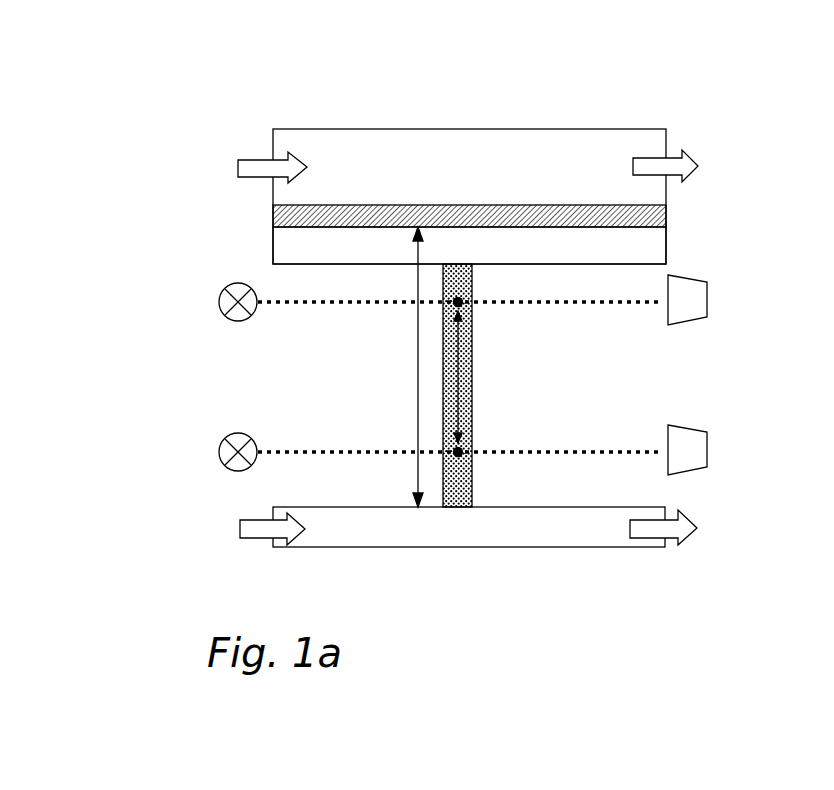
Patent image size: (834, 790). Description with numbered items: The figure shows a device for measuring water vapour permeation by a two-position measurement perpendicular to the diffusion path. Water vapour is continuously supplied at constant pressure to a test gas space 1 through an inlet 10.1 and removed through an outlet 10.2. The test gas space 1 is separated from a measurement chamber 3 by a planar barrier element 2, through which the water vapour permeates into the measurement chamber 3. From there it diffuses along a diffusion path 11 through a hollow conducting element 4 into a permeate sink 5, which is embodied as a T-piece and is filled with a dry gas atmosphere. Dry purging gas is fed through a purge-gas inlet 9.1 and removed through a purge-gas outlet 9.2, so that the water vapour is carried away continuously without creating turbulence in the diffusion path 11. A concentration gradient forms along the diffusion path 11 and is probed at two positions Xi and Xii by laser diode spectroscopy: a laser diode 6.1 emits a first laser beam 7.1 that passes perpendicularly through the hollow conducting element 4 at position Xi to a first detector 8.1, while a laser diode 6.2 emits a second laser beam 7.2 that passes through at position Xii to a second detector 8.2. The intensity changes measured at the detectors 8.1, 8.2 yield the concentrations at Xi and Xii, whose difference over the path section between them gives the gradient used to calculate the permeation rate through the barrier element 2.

The test gas space 1 is at (443, 158).
The barrier element 2 is at (666, 213).
The measurement chamber 3 is at (642, 248).
The hollow conducting element 4 is at (473, 490).
The permeate sink 5 is at (553, 531).
The laser diode 6.1 is at (222, 302).
The laser diode 6.2 is at (222, 450).
The first laser beam 7.1 is at (305, 302).
The second laser beam 7.2 is at (290, 452).
The first detector 8.1 is at (686, 305).
The second detector 8.2 is at (688, 450).
The purge-gas inlet 9.1 is at (250, 532).
The purge-gas outlet 9.2 is at (690, 532).
The inlet 10.1 is at (265, 165).
The outlet 10.2 is at (695, 165).
The diffusion path 11 is at (418, 397).
The first measurement position Xi is at (460, 304).
The second measurement position Xii is at (460, 452).